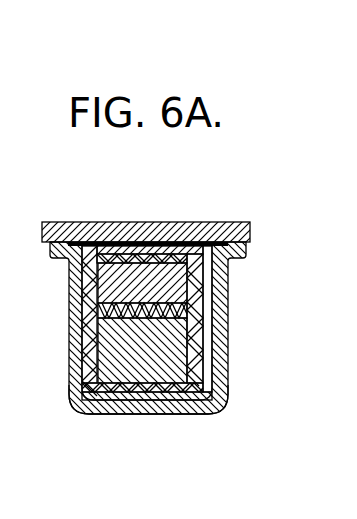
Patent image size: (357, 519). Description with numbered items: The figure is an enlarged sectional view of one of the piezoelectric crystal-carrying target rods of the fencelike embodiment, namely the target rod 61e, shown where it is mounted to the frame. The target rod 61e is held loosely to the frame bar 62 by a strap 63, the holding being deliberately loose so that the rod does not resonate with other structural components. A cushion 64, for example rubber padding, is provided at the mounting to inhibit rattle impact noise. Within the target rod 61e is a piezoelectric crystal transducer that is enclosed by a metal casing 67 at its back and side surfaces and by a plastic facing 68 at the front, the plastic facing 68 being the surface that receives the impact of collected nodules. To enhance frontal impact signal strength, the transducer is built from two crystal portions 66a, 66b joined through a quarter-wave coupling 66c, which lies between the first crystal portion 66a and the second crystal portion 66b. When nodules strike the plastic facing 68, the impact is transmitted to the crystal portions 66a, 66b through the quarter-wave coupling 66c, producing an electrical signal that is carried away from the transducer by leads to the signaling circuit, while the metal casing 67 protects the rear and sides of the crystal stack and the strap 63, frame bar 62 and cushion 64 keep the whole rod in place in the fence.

The target rod 61e is at (179, 238).
The frame bar 62 is at (231, 233).
The strap 63 is at (222, 285).
The cushion 64 is at (212, 313).
The crystal portion 66a is at (118, 283).
The crystal portion 66b is at (114, 336).
The quarter-wave coupling 66c is at (112, 316).
The metal casing 67 is at (202, 342).
The plastic facing 68 is at (102, 414).